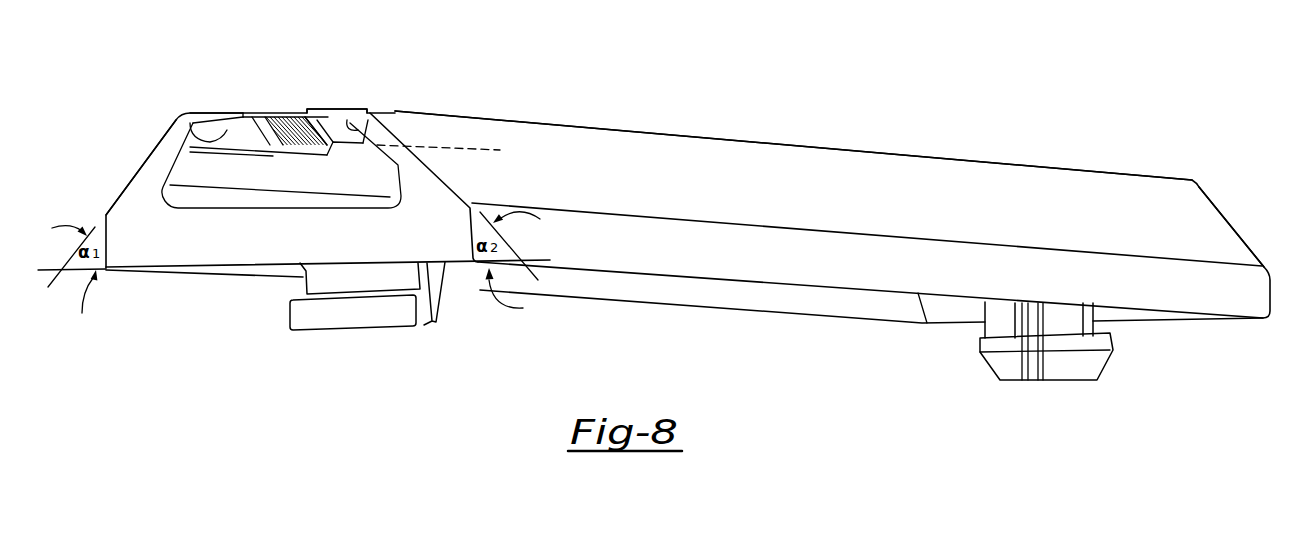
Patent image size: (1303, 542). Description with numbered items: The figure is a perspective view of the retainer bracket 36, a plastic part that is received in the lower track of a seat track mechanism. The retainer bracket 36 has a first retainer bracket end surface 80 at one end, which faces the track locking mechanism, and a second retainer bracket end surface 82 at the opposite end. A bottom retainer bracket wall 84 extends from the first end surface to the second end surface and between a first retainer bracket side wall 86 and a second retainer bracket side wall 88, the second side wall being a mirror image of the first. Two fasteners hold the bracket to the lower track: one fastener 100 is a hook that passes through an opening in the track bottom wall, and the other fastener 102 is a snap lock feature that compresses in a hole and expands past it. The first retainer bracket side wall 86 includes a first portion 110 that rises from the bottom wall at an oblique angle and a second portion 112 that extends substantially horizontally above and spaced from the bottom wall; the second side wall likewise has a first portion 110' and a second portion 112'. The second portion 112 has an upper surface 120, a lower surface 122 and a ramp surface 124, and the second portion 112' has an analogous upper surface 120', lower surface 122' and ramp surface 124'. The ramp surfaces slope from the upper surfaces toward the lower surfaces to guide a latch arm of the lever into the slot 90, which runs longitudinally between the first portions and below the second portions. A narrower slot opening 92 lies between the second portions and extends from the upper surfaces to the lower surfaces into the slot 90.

The retainer bracket 36 is at (1116, 150).
The first retainer bracket end surface 80 is at (215, 244).
The second retainer bracket end surface 82 is at (1237, 231).
The bottom retainer bracket wall 84 is at (315, 196).
The first retainer bracket side wall 86 is at (133, 160).
The second retainer bracket side wall 88 is at (826, 183).
The slot 90 is at (290, 177).
The slot opening 92 is at (280, 104).
The fastener 100 is at (436, 317).
The fastener 102 is at (1038, 385).
The first portion 110 is at (141, 146).
The first portion 110' is at (793, 123).
The second portion 112 is at (255, 105).
The second portion 112' is at (308, 104).
The upper surface 120 is at (216, 76).
The upper surface 120' is at (337, 76).
The lower surface 122 is at (258, 163).
The lower surface 122' is at (343, 160).
The ramp surface 124 is at (212, 105).
The ramp surface 124' is at (359, 102).